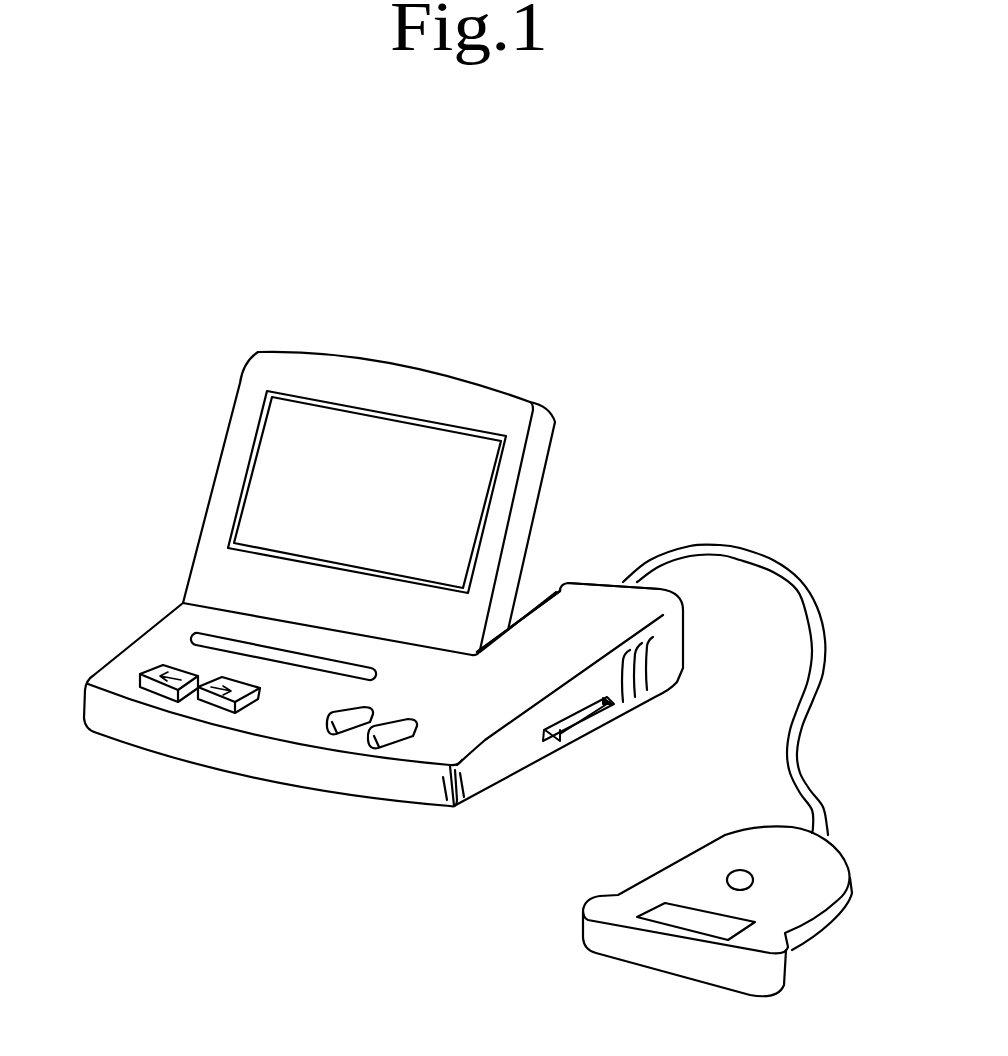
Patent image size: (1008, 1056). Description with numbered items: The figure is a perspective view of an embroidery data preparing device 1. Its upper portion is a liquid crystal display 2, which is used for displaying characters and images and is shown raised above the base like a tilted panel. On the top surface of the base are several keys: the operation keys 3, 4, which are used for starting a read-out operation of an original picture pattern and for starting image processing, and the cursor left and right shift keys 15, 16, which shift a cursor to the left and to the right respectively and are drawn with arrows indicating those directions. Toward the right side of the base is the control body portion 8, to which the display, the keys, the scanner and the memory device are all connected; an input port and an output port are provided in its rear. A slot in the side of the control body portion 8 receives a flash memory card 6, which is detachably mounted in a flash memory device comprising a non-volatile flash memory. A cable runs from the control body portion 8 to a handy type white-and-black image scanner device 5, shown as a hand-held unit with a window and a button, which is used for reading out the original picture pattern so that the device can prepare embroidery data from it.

The embroidery data preparing device 1 is at (657, 388).
The liquid crystal display 2 is at (443, 443).
The operation key 3 is at (333, 732).
The operation key 4 is at (377, 737).
The handy type white-and-black image scanner device 5 is at (852, 895).
The flash memory card 6 is at (561, 736).
The control body portion 8 is at (605, 560).
The cursor left shift key 15 is at (147, 696).
The cursor right shift key 16 is at (213, 710).